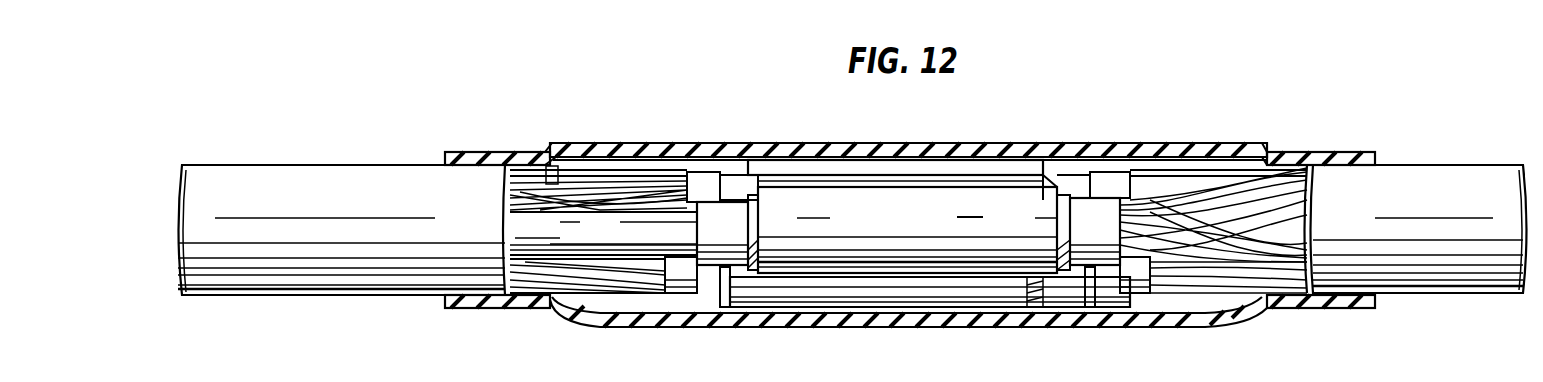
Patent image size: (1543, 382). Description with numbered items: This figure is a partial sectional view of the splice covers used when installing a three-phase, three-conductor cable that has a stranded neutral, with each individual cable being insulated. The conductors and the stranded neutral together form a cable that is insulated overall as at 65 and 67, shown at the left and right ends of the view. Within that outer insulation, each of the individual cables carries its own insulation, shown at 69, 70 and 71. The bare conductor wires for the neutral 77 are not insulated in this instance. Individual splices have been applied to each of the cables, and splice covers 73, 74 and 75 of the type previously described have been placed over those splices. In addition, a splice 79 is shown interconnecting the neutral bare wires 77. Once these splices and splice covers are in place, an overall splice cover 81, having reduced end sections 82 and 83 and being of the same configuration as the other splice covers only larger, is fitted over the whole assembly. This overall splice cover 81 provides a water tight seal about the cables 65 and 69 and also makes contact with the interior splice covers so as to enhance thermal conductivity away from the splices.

The cable insulation 65 is at (1446, 185).
The cable insulation 67 is at (273, 183).
The individual cable insulation 69 is at (557, 178).
The individual cable insulation 70 is at (528, 223).
The individual cable insulation 71 is at (538, 263).
The splice cover 73 is at (935, 168).
The splice cover 74 is at (908, 222).
The splice cover 75 is at (928, 290).
The neutral bare wires 77 is at (1235, 175).
The splice 79 is at (884, 178).
The overall splice cover 81 is at (800, 150).
The reduced end section 82 is at (484, 152).
The reduced end section 83 is at (1360, 130).